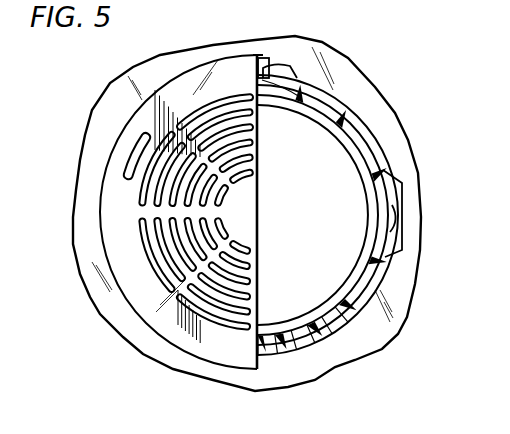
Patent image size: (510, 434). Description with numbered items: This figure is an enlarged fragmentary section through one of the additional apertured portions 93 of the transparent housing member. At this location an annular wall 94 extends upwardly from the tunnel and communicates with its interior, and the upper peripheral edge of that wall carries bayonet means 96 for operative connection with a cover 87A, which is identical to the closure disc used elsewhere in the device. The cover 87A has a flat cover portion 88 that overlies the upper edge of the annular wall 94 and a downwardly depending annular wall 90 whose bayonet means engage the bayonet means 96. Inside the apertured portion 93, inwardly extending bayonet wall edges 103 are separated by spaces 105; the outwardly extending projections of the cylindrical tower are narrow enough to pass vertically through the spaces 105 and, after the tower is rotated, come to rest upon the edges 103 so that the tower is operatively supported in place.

The cover 87A is at (117, 300).
The flat cover portion 88 is at (110, 233).
The downwardly depending annular wall 90 is at (363, 152).
The apertured portion 93 is at (337, 316).
The annular wall 94 is at (365, 125).
The bayonet means 96 is at (288, 63).
The bayonet wall edges 103 is at (327, 92).
The spaces 105 is at (270, 72).